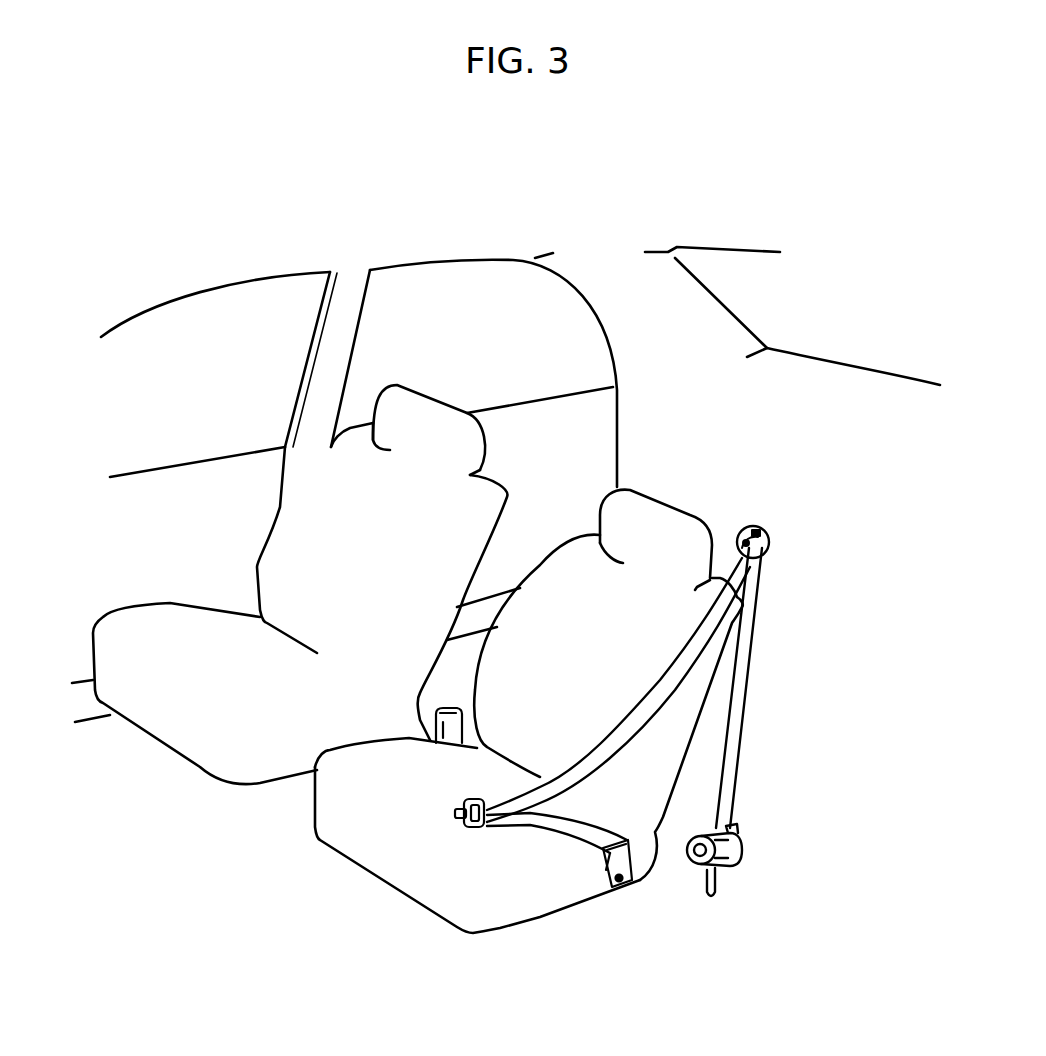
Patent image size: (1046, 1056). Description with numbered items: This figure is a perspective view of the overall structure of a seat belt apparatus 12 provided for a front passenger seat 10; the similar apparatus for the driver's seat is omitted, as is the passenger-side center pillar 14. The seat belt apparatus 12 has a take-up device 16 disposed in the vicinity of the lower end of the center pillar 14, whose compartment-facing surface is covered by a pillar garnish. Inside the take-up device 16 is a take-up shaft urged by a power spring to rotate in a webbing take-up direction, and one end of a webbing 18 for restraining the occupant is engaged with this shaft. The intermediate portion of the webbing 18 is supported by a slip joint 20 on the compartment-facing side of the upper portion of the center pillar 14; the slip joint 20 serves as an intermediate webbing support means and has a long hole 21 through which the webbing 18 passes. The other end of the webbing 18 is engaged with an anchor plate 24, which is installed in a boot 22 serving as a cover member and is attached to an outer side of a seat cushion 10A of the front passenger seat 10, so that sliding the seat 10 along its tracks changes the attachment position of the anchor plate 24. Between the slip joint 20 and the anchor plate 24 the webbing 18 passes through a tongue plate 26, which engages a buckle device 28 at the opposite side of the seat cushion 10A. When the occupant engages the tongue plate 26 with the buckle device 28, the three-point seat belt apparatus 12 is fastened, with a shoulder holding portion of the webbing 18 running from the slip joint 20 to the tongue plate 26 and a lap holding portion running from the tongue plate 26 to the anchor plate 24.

The front passenger seat 10 is at (504, 474).
The seat cushion 10A is at (207, 753).
The seat belt apparatus 12 is at (799, 630).
The center pillar 14 is at (328, 365).
The take-up device 16 is at (741, 837).
The webbing 18 is at (742, 697).
The slip joint 20 is at (769, 543).
The long hole 21 is at (737, 560).
The boot 22 is at (597, 867).
The anchor plate 24 is at (637, 880).
The tongue plate 26 is at (470, 830).
The buckle device 28 is at (430, 733).